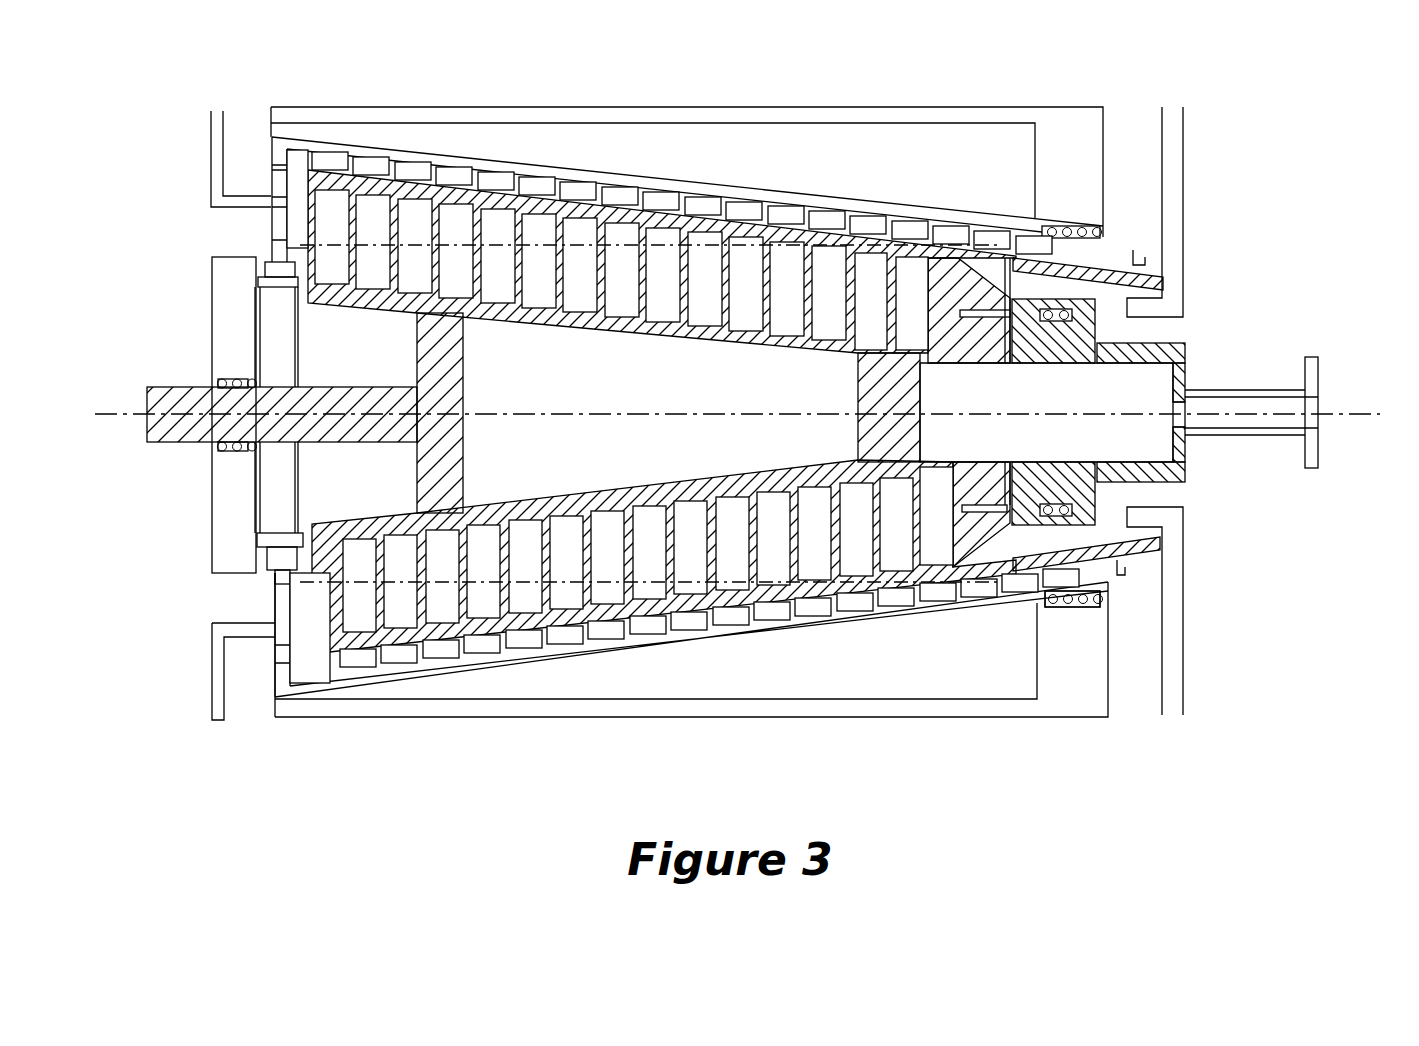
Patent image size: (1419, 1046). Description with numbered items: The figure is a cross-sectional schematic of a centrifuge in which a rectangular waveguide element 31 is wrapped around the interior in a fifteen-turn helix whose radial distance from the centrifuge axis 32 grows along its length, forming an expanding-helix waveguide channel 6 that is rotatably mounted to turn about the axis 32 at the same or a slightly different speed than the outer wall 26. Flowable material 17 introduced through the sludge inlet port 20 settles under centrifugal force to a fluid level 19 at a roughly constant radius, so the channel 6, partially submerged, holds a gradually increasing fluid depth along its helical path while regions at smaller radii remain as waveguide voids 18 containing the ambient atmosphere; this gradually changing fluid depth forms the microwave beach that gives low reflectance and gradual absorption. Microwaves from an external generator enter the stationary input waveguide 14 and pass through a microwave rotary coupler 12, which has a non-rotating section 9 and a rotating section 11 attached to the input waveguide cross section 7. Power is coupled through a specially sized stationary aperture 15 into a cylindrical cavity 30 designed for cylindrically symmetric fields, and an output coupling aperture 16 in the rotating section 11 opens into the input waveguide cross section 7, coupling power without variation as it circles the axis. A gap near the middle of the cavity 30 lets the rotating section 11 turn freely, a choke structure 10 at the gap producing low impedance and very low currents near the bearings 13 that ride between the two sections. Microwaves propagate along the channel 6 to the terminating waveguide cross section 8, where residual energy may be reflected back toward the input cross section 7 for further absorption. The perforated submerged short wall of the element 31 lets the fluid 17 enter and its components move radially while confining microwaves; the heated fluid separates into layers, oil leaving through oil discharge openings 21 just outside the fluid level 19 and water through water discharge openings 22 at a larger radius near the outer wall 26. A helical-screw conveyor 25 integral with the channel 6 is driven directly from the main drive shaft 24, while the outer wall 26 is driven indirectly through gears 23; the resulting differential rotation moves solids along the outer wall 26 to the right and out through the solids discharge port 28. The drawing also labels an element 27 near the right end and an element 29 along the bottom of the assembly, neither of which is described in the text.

The expanding-helix waveguide channel 6 is at (666, 330).
The input waveguide cross section 7 is at (936, 516).
The terminating waveguide cross section 8 is at (332, 237).
The non-rotating section 9 is at (1128, 362).
The choke structure 10 is at (1008, 462).
The rotating section 11 is at (948, 365).
The microwave rotary coupler 12 is at (1195, 350).
The bearings 13 is at (1057, 503).
The stationary input waveguide 14 is at (1320, 420).
The stationary aperture 15 is at (1190, 405).
The output coupling aperture 16 is at (940, 467).
The flowable material 17 is at (455, 218).
The waveguide voids 18 is at (540, 272).
The fluid level 19 is at (300, 246).
The sludge inlet port 20 is at (1140, 488).
The oil discharge openings 21 is at (247, 597).
The water discharge openings 22 is at (245, 682).
The gears 23 is at (283, 527).
The main drive shaft 24 is at (183, 388).
The helical-screw conveyor 25 is at (738, 235).
The outer wall 26 is at (775, 625).
The bearing 27 is at (1078, 606).
The solids discharge port 28 is at (1137, 663).
The housing 29 is at (600, 717).
The cylindrical cavity 30 is at (1046, 412).
The waveguide element 31 is at (830, 336).
The centrifuge axis 32 is at (734, 414).